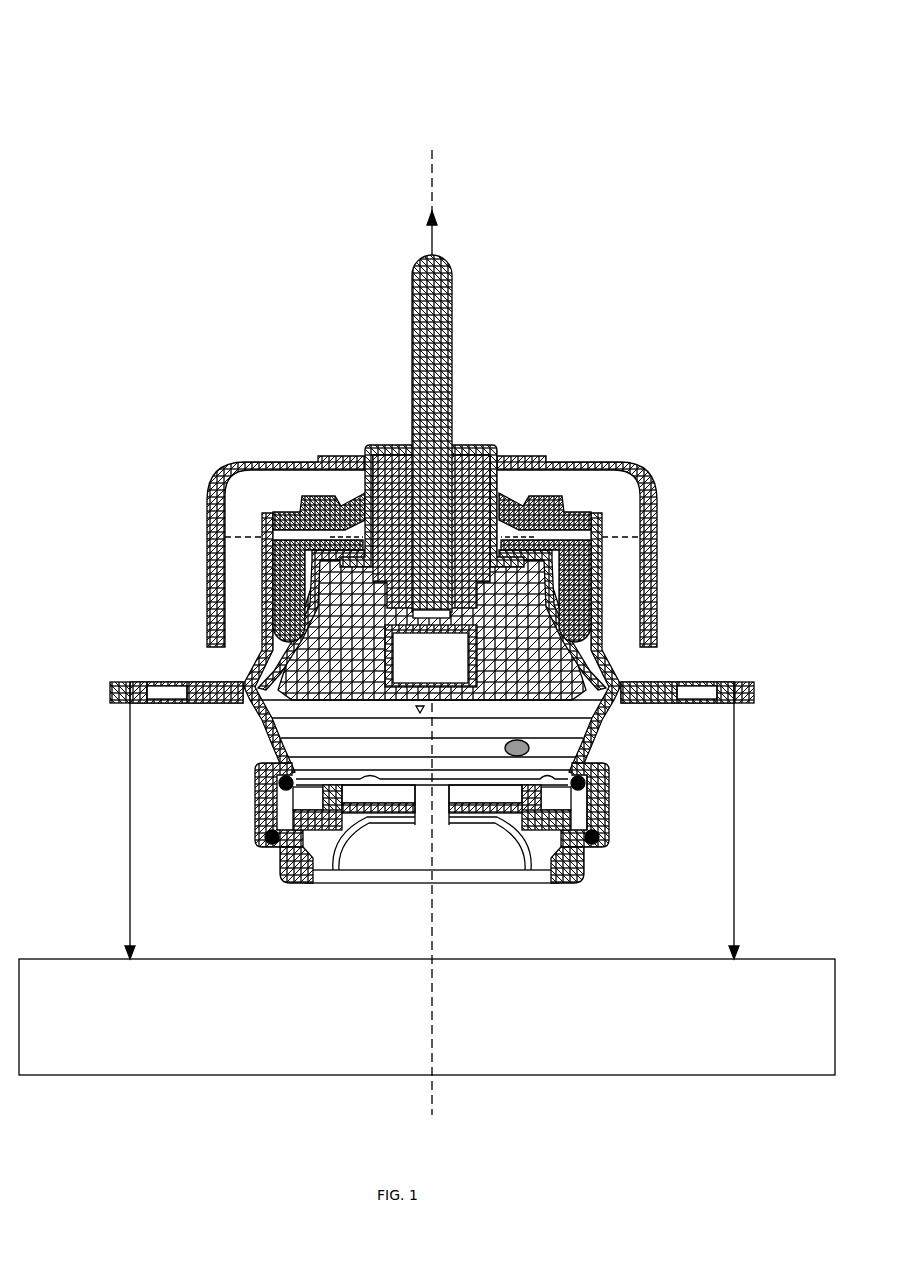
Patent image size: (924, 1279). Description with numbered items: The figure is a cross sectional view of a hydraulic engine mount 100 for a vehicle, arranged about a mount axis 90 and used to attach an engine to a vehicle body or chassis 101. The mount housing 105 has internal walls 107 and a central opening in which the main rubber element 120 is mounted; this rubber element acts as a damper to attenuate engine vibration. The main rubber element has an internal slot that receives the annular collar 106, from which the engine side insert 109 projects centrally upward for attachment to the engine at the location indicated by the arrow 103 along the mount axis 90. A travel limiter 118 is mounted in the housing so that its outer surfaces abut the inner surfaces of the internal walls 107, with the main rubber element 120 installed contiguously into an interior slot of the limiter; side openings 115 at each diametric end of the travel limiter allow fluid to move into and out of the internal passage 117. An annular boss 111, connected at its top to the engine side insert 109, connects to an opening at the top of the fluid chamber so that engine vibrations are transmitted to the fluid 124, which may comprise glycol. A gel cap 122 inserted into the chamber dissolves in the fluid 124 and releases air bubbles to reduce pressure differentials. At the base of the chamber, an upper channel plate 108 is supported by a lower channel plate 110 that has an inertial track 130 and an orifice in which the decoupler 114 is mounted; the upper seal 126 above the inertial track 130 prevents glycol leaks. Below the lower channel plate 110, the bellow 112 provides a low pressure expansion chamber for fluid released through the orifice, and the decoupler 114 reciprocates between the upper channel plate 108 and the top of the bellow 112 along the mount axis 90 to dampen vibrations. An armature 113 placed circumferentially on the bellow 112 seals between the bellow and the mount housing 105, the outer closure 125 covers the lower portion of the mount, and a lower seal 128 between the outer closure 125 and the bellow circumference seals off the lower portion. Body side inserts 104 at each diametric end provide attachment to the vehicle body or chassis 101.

The mount assembly 100 is at (118, 66).
The mount axis 90 is at (436, 176).
The arrow 103 is at (437, 237).
The vehicle body or chassis 101 is at (772, 958).
The body side insert 104 is at (108, 681).
The mount housing 105 is at (247, 461).
The annular collar 106 is at (470, 452).
The internal walls 107 is at (293, 479).
The upper channel plate 108 is at (292, 776).
The engine side insert 109 is at (440, 378).
The lower channel plate 110 is at (290, 812).
The annular boss 111 is at (403, 657).
The bellow 112 is at (363, 857).
The armature 113 is at (282, 861).
The decoupler 114 is at (437, 813).
The side openings 115 is at (268, 578).
The internal passage 117 is at (573, 587).
The travel limiter 118 is at (587, 521).
The main rubber element 120 is at (557, 648).
The gel cap 122 is at (498, 717).
The fluid 124 is at (512, 652).
The outer closure 125 is at (607, 827).
The upper seal 126 is at (573, 782).
The lower seal 128 is at (265, 838).
The inertial track 130 is at (563, 798).